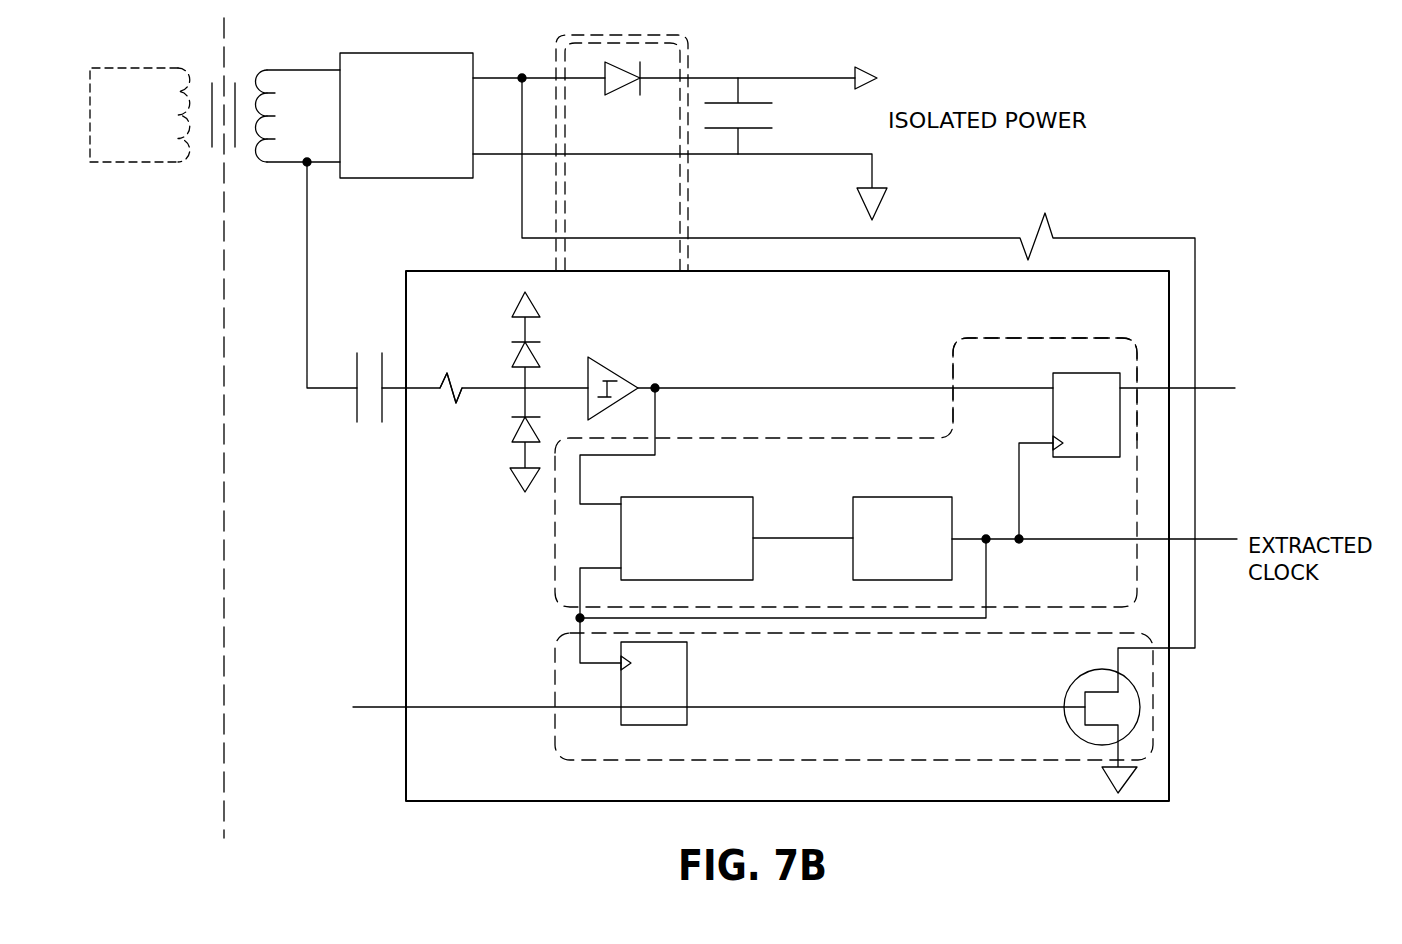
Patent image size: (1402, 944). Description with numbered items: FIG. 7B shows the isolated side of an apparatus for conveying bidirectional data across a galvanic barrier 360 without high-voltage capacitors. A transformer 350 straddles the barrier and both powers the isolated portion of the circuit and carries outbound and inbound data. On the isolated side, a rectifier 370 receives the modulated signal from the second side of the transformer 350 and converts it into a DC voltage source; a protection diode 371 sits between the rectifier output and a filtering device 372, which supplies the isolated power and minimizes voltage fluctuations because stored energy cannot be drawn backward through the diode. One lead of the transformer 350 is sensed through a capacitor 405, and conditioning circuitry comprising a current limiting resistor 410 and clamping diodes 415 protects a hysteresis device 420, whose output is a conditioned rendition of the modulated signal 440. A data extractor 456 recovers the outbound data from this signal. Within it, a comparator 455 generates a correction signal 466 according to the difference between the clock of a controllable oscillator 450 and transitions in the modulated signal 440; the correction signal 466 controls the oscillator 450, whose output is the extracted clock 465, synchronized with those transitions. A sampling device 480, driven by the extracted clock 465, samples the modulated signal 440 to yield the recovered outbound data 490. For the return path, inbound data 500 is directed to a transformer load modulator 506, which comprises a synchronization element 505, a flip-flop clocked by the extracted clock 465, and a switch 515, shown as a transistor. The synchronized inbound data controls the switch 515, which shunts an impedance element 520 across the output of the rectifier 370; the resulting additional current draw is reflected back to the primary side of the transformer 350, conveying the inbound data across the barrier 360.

The transformer 350 is at (243, 64).
The galvanic barrier 360 is at (222, 502).
The rectifier 370 is at (405, 180).
The protection diode 371 is at (664, 50).
The filtering device 372 is at (773, 118).
The capacitor 405 is at (370, 425).
The current limiting resistor 410 is at (456, 372).
The clamping diodes 415 is at (540, 362).
The hysteresis device 420 is at (617, 368).
The modulated signal 440 is at (792, 385).
The controllable oscillator 450 is at (905, 494).
The comparator 455 is at (722, 494).
The data extractor 456 is at (1046, 335).
The extracted clock 465 is at (1064, 545).
The correction signal 466 is at (805, 535).
The sampling device 480 is at (1086, 460).
The recovered outbound data 490 is at (1212, 388).
The inbound data 500 is at (372, 703).
The synchronization element 505 is at (688, 688).
The transformer load modulator 506 is at (554, 672).
The switch 515 is at (1068, 691).
The impedance element 520 is at (1053, 222).